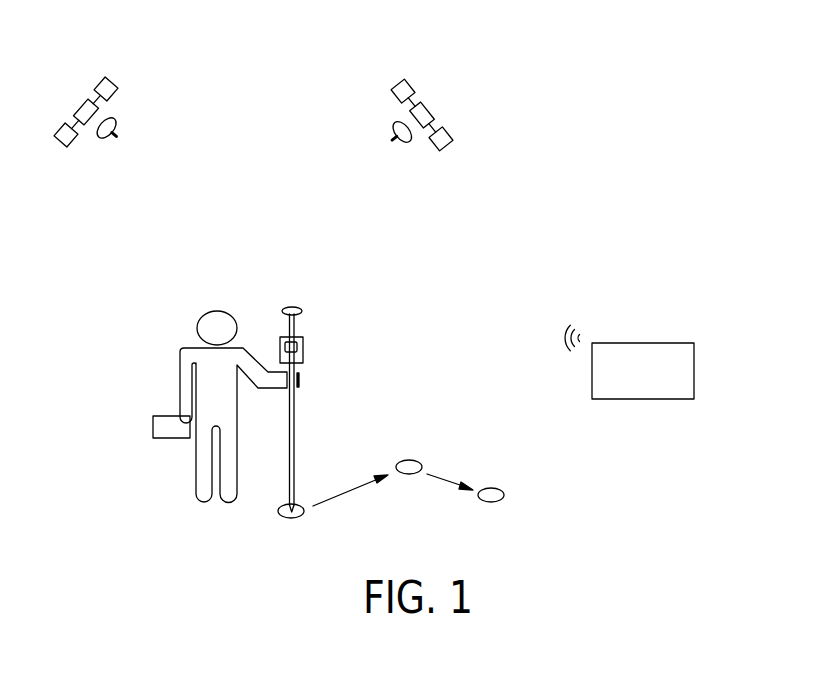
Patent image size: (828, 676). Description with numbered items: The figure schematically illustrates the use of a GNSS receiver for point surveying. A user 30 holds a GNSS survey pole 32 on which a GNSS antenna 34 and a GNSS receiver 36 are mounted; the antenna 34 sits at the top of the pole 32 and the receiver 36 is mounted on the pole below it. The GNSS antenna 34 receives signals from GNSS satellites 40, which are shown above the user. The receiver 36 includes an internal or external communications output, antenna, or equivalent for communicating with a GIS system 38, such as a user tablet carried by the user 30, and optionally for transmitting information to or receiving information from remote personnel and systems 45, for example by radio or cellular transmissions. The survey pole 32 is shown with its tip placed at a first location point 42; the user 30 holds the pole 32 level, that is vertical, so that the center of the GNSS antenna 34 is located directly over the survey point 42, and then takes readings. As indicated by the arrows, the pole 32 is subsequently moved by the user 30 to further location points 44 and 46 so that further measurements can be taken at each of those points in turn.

The user 30 is at (178, 362).
The GNSS survey pole 32 is at (296, 440).
The GNSS antenna 34 is at (297, 308).
The GNSS receiver 36 is at (303, 353).
The GIS system 38 is at (153, 428).
The GNSS satellites 40 is at (112, 102).
The first location point 42 is at (282, 515).
The further location point 44 is at (409, 459).
The remote personnel and systems 45 is at (645, 342).
The further location point 46 is at (504, 496).